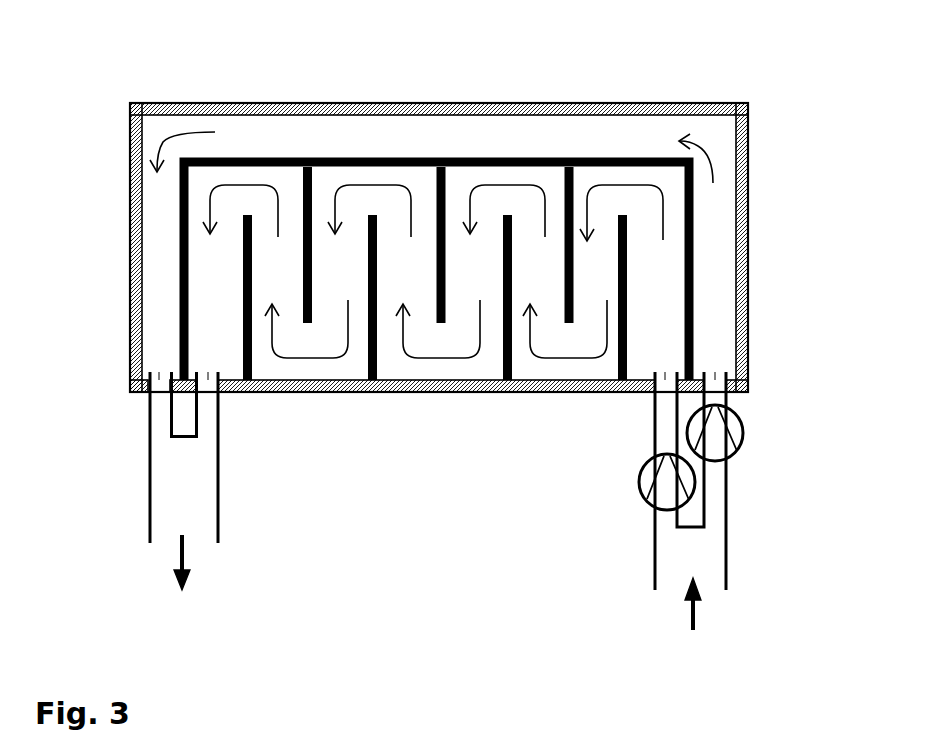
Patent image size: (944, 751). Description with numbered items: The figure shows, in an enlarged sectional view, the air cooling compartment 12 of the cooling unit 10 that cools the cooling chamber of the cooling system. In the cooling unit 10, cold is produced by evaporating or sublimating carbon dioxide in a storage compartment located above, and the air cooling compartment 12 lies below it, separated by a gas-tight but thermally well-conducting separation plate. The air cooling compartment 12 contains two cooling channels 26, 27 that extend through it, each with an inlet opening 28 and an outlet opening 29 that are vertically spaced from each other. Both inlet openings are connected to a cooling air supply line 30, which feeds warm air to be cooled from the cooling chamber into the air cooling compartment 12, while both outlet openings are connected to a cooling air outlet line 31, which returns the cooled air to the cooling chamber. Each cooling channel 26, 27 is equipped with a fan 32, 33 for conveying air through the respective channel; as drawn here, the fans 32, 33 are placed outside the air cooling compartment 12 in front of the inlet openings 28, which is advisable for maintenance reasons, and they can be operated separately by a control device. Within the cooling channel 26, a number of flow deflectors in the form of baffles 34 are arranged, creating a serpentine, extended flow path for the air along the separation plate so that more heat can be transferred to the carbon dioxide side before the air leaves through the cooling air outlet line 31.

The cooling unit 10 is at (95, 70).
The air cooling compartment 12 is at (126, 180).
The cooling channel 26 is at (663, 272).
The cooling channel 27 is at (711, 222).
The inlet opening 28 is at (668, 380).
The outlet opening 29 is at (207, 368).
The cooling air supply line 30 is at (690, 555).
The cooling air outlet line 31 is at (180, 514).
The fan 32 is at (640, 488).
The fan 33 is at (722, 442).
The baffles 34 is at (312, 178).